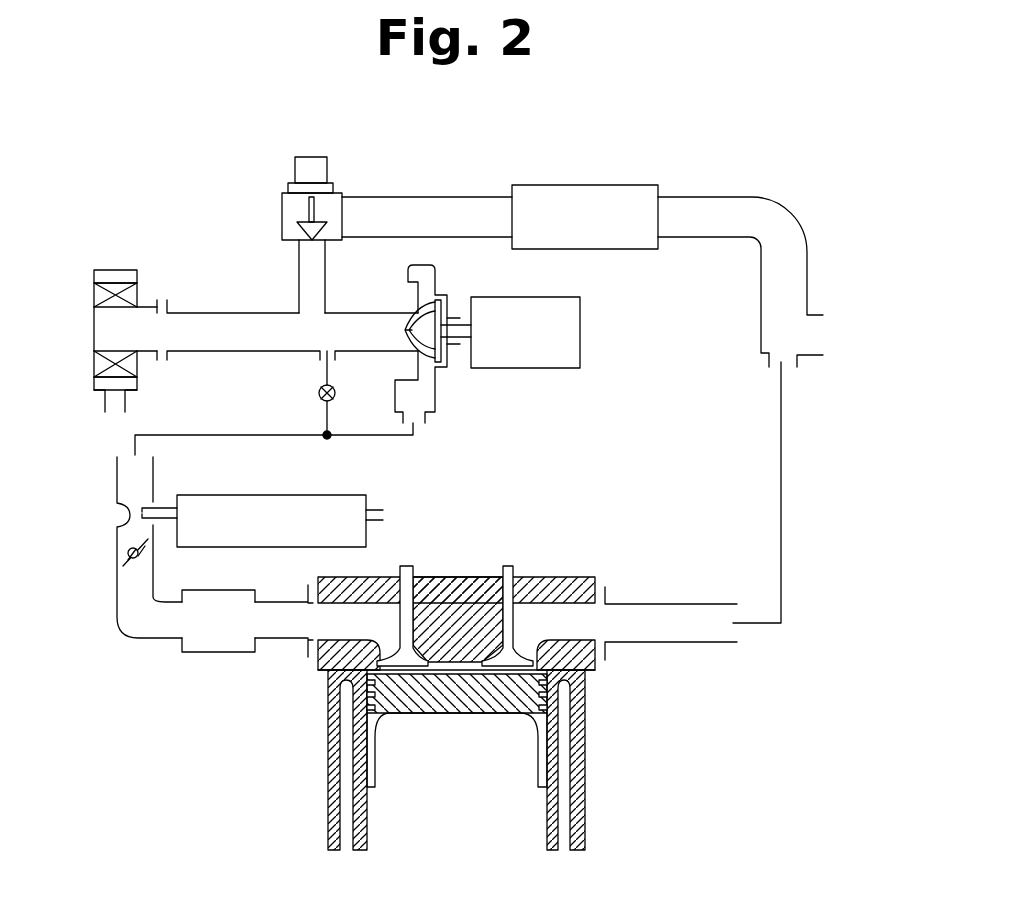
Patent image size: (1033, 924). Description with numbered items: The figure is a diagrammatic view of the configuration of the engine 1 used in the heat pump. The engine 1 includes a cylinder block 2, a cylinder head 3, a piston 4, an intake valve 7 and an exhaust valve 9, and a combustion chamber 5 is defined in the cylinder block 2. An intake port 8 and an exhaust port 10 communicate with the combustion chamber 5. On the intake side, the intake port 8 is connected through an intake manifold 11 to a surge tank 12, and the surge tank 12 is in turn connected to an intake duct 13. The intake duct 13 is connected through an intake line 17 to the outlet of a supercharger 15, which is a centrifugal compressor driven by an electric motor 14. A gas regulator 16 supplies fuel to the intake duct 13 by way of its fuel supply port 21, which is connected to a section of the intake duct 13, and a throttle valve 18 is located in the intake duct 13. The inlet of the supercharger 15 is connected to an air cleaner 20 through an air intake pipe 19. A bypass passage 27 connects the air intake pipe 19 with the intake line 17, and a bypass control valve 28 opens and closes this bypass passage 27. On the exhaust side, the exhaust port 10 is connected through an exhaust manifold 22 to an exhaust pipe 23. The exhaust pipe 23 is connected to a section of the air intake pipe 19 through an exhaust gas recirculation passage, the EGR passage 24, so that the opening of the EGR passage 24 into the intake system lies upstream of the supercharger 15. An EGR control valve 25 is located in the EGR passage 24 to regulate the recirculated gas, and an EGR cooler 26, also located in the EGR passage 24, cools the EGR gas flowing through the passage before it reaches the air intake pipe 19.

The engine 1 is at (646, 730).
The cylinder block 2 is at (328, 728).
The cylinder head 3 is at (452, 577).
The piston 4 is at (445, 713).
The combustion chamber 5 is at (465, 672).
The intake valve 7 is at (398, 570).
The intake port 8 is at (352, 603).
The exhaust valve 9 is at (515, 570).
The exhaust port 10 is at (568, 603).
The intake manifold 11 is at (277, 638).
The surge tank 12 is at (215, 652).
The intake duct 13 is at (123, 628).
The electric motor 14 is at (527, 368).
The supercharger 15 is at (407, 273).
The gas regulator 16 is at (265, 497).
The intake line 17 is at (183, 435).
The throttle valve 18 is at (117, 557).
The air intake pipe 19 is at (222, 313).
The air cleaner 20 is at (94, 330).
The fuel supply port 21 is at (158, 507).
The exhaust manifold 22 is at (685, 604).
The exhaust pipe 23 is at (781, 470).
The EGR passage 24 is at (705, 200).
The EGR control valve 25 is at (290, 210).
The EGR cooler 26 is at (602, 190).
The bypass passage 27 is at (320, 412).
The bypass control valve 28 is at (319, 391).